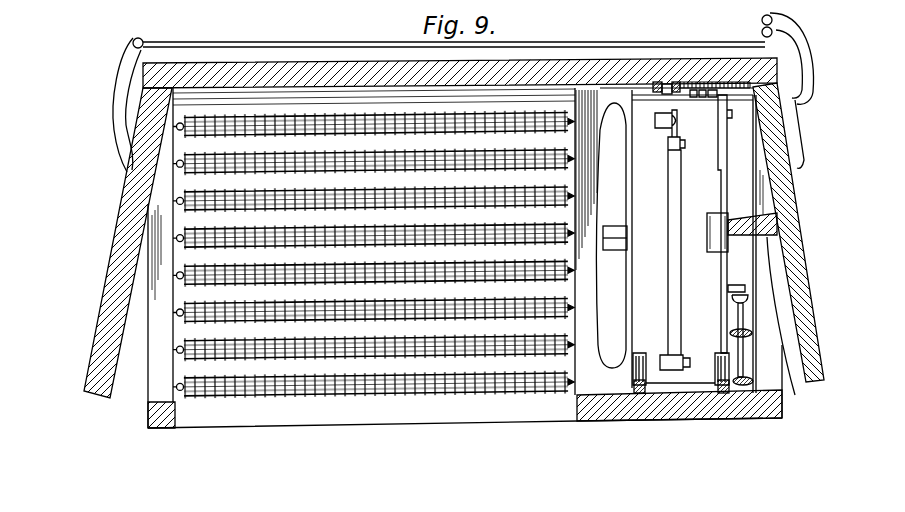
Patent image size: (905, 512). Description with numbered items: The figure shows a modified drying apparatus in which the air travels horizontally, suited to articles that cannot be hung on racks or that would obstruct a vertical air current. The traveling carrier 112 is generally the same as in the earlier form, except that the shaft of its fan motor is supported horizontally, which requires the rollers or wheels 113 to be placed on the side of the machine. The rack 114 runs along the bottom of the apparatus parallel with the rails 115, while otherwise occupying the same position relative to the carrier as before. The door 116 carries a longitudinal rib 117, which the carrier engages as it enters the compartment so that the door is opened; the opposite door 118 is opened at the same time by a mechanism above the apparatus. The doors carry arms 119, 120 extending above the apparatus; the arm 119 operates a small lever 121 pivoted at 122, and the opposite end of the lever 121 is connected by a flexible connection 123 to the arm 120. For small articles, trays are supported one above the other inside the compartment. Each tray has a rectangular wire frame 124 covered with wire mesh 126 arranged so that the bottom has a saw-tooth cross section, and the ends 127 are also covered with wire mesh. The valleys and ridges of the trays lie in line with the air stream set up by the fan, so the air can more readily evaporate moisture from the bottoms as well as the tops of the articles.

The traveling carrier 112 is at (625, 107).
The rollers or wheels 113 is at (627, 396).
The rack 114 is at (746, 392).
The rails 115 is at (638, 395).
The door 116 is at (818, 383).
The longitudinal rib 117 is at (795, 395).
The opposite door 118 is at (108, 268).
The arm 119 is at (791, 133).
The arm 120 is at (115, 99).
The small lever 121 is at (763, 27).
The pivot 122 is at (753, 57).
The flexible connection 123 is at (352, 37).
The wire frame 124 is at (297, 388).
The wire mesh 126 is at (318, 397).
The ends 127 is at (203, 400).